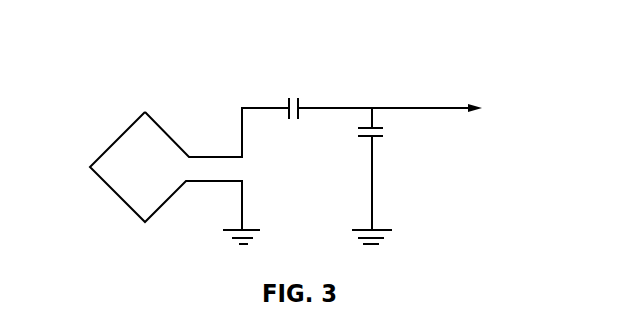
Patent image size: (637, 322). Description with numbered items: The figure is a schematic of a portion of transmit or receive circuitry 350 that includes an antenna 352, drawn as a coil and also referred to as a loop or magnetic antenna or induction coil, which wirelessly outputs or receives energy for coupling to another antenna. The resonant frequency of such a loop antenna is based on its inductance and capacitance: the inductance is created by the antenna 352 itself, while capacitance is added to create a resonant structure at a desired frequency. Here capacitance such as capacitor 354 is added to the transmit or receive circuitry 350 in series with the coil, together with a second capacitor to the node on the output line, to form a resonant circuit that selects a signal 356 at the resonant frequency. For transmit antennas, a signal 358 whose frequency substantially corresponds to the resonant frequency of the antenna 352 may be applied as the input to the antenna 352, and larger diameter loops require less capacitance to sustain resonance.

The transmit or receive circuitry 350 is at (186, 57).
The antenna 352 is at (120, 135).
The capacitor 354 is at (298, 103).
The signal 356 is at (375, 138).
The signal 358 is at (407, 108).